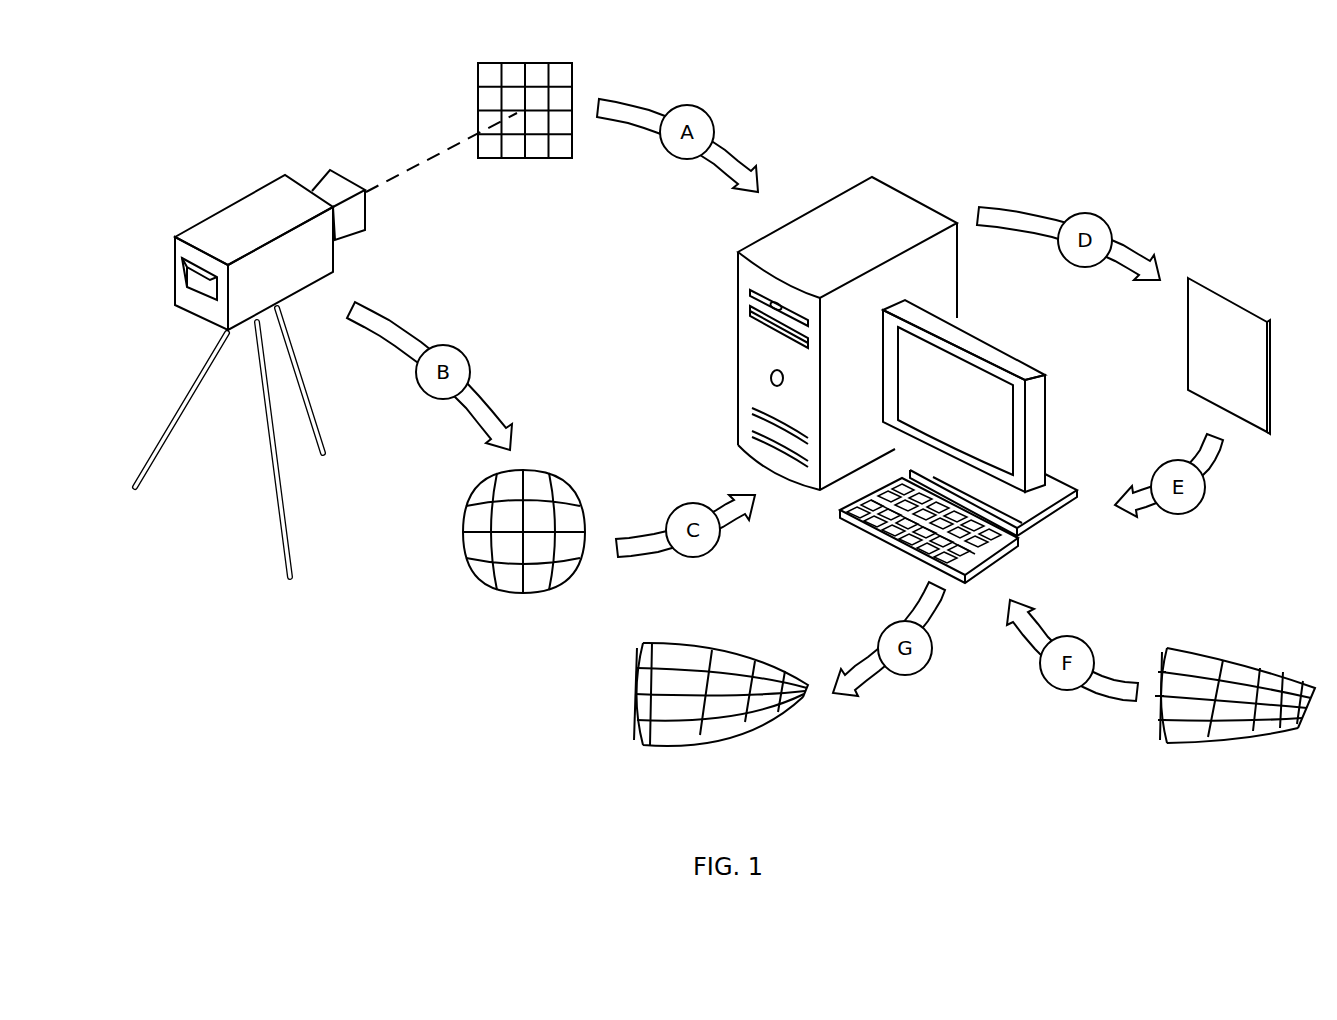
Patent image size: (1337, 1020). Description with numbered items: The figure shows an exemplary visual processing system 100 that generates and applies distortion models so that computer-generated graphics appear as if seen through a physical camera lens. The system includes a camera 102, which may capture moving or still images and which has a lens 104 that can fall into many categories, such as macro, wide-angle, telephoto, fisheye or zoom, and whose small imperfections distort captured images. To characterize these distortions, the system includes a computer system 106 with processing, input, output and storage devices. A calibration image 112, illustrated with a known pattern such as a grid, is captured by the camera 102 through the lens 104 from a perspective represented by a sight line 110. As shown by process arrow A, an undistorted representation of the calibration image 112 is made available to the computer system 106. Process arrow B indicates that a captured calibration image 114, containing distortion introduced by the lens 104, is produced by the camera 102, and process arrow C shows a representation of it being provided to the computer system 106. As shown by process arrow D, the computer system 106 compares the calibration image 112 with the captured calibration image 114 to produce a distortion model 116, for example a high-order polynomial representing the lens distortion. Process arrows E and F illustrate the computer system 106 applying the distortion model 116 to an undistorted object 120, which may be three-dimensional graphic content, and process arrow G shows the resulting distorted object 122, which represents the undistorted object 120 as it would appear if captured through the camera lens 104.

The visual processing system 100 is at (208, 774).
The camera 102 is at (259, 191).
The lens 104 is at (330, 170).
The computer system 106 is at (813, 536).
The sight line 110 is at (425, 168).
The calibration image 112 is at (572, 63).
The captured calibration image 114 is at (567, 483).
The distortion model 116 is at (1267, 322).
The undistorted object 120 is at (1162, 743).
The distorted object 122 is at (643, 743).